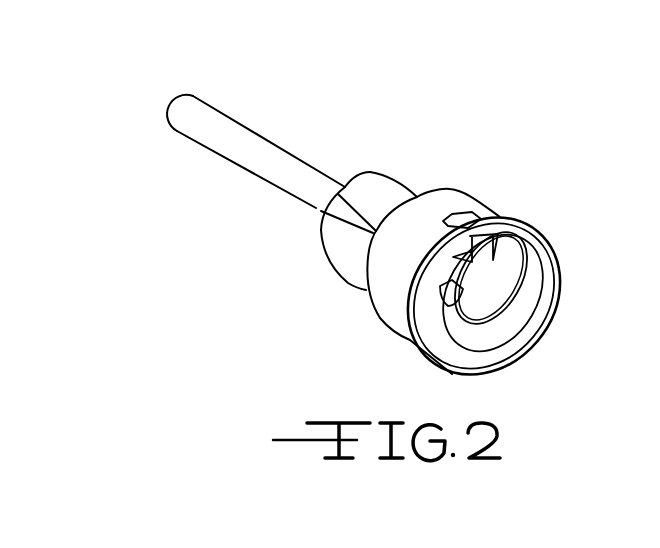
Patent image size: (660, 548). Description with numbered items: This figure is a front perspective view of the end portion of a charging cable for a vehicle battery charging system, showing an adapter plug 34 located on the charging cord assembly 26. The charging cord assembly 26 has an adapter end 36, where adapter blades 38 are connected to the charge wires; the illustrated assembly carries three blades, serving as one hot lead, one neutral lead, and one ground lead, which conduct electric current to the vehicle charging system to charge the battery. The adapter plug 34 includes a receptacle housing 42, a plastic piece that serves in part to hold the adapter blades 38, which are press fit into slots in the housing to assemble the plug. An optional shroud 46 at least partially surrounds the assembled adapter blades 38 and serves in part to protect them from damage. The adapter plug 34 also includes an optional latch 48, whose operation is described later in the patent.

The charging cord assembly 26 is at (393, 115).
The adapter plug 34 is at (548, 128).
The adapter end 36 is at (237, 143).
The adapter blades 38 is at (473, 253).
The receptacle housing 42 is at (336, 241).
The shroud 46 is at (398, 305).
The latch 48 is at (462, 212).